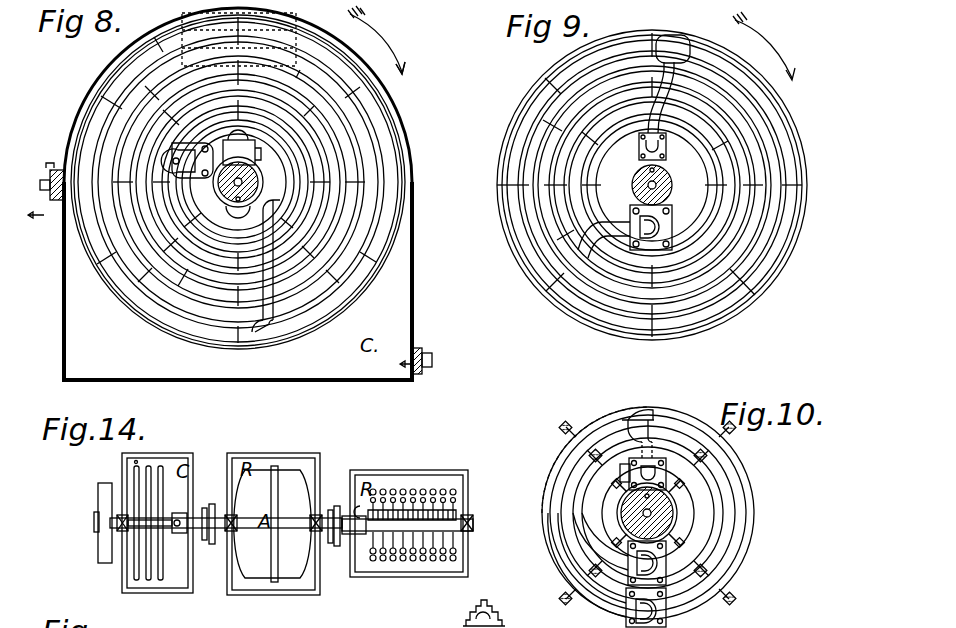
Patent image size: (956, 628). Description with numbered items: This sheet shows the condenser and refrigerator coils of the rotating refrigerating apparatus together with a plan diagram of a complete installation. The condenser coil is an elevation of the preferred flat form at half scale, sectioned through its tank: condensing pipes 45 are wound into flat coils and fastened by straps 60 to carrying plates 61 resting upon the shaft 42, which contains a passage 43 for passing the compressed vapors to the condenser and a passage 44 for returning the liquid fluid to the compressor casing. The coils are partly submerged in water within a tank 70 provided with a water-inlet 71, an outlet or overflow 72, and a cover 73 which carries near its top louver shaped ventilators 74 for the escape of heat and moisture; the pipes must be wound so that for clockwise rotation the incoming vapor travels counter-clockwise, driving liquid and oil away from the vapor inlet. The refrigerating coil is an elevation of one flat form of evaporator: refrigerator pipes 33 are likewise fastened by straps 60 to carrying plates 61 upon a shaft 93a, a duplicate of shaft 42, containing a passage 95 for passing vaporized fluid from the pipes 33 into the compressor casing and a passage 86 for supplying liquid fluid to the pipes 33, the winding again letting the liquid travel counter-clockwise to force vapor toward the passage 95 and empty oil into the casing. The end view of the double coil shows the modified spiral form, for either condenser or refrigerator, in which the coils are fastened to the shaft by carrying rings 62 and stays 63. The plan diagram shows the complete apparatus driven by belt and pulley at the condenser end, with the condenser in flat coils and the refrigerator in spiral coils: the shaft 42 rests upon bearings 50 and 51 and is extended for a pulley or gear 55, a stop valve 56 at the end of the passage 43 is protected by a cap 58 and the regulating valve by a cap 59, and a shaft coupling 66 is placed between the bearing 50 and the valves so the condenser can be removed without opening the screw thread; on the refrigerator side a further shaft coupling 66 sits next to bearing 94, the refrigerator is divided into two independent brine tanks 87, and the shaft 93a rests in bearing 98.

In FIG. 9, the pipes 33 is at (733, 200).
In FIG. 14, the pipes 33 is at (452, 490).
In FIG. 8, the shaft 42 is at (262, 172).
In FIG. 14, the shaft 42 is at (158, 525).
In FIG. 8, the passage 43 is at (257, 148).
In FIG. 8, the passage 44 is at (263, 180).
In FIG. 8, the pipes 45 is at (335, 158).
In FIG. 14, the pipes 45 is at (163, 508).
In FIG. 14, the bearing 50 is at (229, 536).
In FIG. 14, the bearing 51 is at (118, 524).
In FIG. 14, the pulley or gear 55 is at (103, 491).
In FIG. 14, the stop valve 56 is at (182, 519).
In FIG. 8, the cap 58 is at (246, 175).
In FIG. 8, the cap 59 is at (230, 188).
In FIG. 8, the straps 60 is at (100, 110).
In FIG. 9, the straps 60 is at (745, 170).
In FIG. 8, the carrying plates 61 is at (157, 322).
In FIG. 9, the carrying plates 61 is at (795, 238).
In FIG. 14, the carrying plates 61 is at (137, 466).
In FIG. 10, the carrying rings 62 is at (675, 523).
In FIG. 10, the stays 63 is at (668, 563).
In FIG. 14, the shaft coupling 66 is at (205, 536).
In FIG. 8, the tank 70 is at (64, 300).
In FIG. 14, the tank 70 is at (127, 567).
In FIG. 8, the water-inlet 71 is at (425, 362).
In FIG. 8, the outlet or overflow 72 is at (55, 220).
In FIG. 8, the cover 73 is at (115, 68).
In FIG. 8, the louver shaped ventilators 74 is at (183, 52).
In FIG. 9, the passage 86 is at (662, 178).
In FIG. 14, the tank 87 is at (280, 448).
In FIG. 9, the shaft 93a is at (700, 160).
In FIG. 14, the shaft 93a is at (400, 527).
In FIG. 14, the bearing 94 is at (320, 516).
In FIG. 9, the passage 95 is at (668, 192).
In FIG. 14, the bearing 98 is at (471, 518).